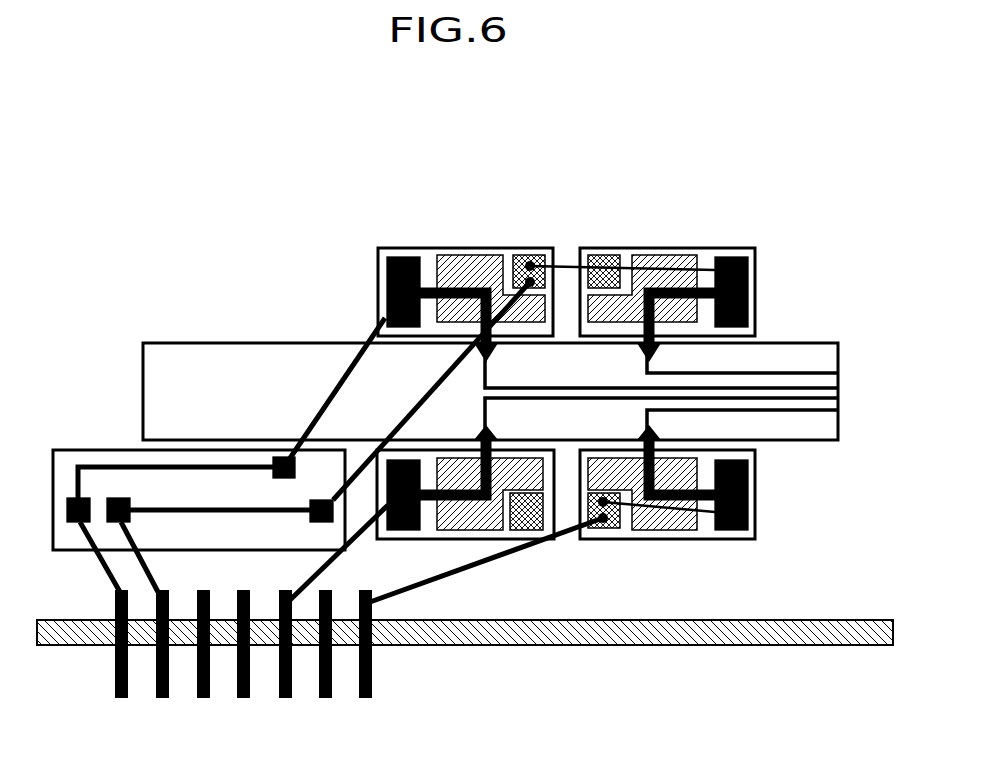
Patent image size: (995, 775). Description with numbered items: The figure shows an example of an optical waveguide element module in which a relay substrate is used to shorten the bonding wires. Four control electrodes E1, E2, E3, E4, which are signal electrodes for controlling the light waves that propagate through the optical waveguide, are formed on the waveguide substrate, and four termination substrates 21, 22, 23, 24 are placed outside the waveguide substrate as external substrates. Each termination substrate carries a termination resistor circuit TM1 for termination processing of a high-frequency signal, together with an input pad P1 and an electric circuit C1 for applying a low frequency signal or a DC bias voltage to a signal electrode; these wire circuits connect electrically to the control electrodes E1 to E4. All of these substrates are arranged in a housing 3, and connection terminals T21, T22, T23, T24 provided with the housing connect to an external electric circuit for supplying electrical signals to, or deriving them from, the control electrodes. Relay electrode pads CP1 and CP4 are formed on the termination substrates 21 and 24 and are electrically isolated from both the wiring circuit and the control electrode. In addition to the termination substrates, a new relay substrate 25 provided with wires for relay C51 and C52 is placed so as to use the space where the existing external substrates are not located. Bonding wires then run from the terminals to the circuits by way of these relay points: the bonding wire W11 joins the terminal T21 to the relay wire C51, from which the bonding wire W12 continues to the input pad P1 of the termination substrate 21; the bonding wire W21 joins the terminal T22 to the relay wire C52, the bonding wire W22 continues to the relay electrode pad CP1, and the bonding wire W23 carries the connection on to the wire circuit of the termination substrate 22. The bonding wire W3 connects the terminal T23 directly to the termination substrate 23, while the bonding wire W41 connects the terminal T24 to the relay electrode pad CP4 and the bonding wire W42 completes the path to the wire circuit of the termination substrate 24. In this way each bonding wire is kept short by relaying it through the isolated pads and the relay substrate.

The external substrate 21 is at (434, 275).
The external substrate 22 is at (718, 246).
The external substrate 23 is at (458, 540).
The external substrate 24 is at (663, 517).
The relay substrate 25 is at (178, 453).
The housing 3 is at (625, 640).
The input pad P1 is at (387, 265).
The termination resistor circuit TM1 is at (466, 256).
The relay electrode pad CP1 is at (536, 258).
The relay electrode pad CP4 is at (602, 528).
The electric circuit C1 is at (430, 298).
The wire for relay C51 is at (181, 489).
The wire for relay C52 is at (220, 518).
The control electrode E1 is at (661, 365).
The control electrode E2 is at (742, 358).
The control electrode E3 is at (661, 419).
The control electrode E4 is at (742, 425).
The bonding wire W11 is at (90, 557).
The bonding wire W12 is at (334, 392).
The bonding wire W21 is at (154, 557).
The bonding wire W22 is at (431, 391).
The bonding wire W23 is at (647, 257).
The bonding wire W3 is at (339, 552).
The bonding wire W41 is at (486, 560).
The bonding wire W42 is at (648, 528).
The connection terminal T21 is at (118, 680).
The connection terminal T22 is at (199, 690).
The connection terminal T23 is at (292, 695).
The connection terminal T24 is at (372, 695).